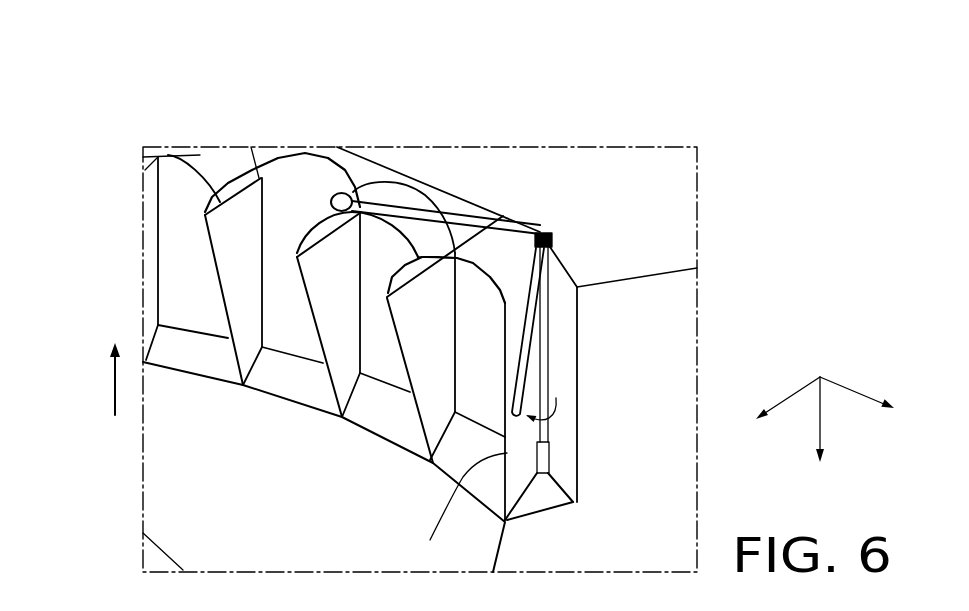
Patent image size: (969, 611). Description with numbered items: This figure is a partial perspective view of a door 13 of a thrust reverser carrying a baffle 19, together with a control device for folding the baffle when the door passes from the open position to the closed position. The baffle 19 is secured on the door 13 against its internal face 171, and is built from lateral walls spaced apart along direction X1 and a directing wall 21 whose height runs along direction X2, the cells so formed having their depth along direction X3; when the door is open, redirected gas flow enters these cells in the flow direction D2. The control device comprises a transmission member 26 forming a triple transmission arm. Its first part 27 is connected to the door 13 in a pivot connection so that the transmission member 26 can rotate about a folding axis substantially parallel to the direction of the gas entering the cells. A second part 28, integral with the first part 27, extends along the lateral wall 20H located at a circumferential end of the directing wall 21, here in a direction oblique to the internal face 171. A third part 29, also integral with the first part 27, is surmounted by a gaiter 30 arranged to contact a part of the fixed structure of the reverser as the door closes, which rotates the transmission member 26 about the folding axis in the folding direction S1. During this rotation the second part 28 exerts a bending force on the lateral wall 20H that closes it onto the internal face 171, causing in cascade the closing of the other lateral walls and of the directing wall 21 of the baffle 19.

The door 13 is at (663, 333).
The baffle 19 is at (231, 162).
The internal face 171 is at (182, 249).
The directing wall 21 is at (456, 282).
The lateral wall 20H is at (440, 537).
The transmission member 26 is at (474, 271).
The first part 27 is at (549, 333).
The second part 28 is at (530, 302).
The third part 29 is at (423, 213).
The gaiter 30 is at (342, 194).
The folding direction S1 is at (556, 412).
The flow direction D2 is at (115, 388).
The direction X1 is at (875, 406).
The direction X2 is at (769, 411).
The direction X3 is at (839, 429).